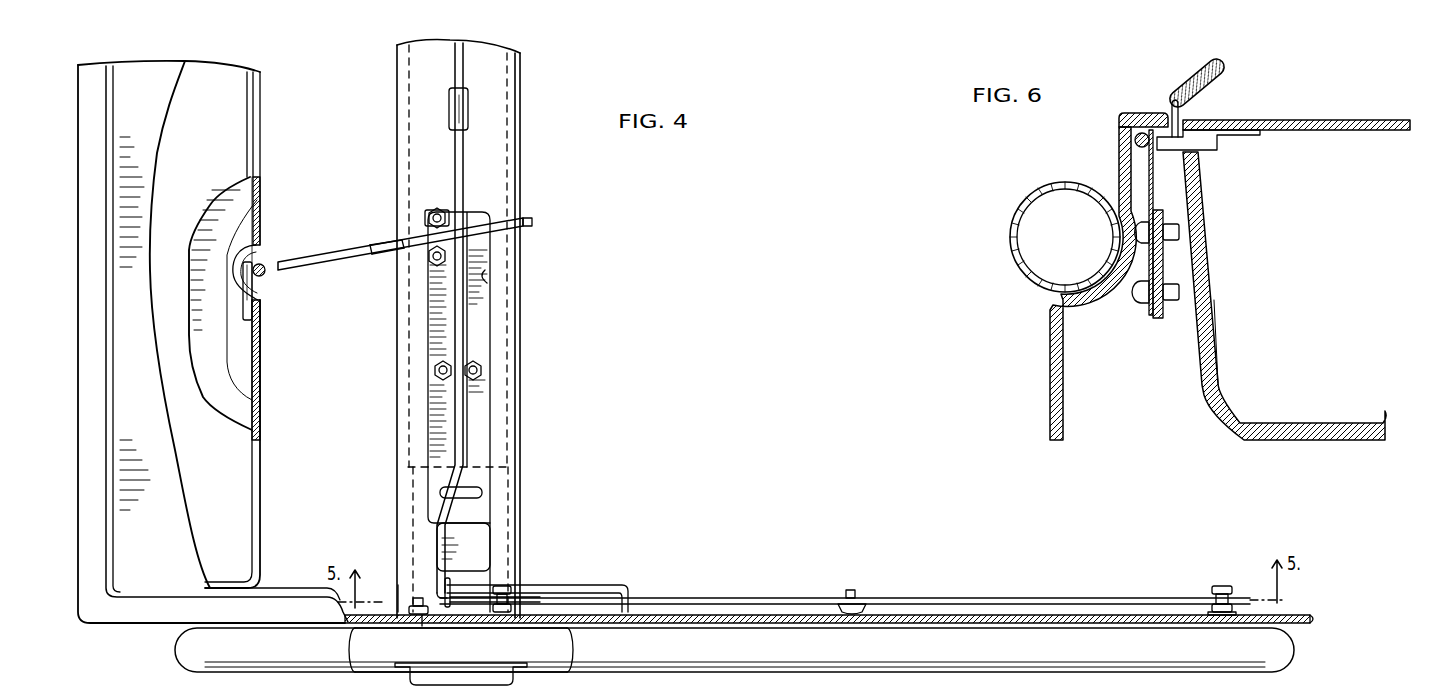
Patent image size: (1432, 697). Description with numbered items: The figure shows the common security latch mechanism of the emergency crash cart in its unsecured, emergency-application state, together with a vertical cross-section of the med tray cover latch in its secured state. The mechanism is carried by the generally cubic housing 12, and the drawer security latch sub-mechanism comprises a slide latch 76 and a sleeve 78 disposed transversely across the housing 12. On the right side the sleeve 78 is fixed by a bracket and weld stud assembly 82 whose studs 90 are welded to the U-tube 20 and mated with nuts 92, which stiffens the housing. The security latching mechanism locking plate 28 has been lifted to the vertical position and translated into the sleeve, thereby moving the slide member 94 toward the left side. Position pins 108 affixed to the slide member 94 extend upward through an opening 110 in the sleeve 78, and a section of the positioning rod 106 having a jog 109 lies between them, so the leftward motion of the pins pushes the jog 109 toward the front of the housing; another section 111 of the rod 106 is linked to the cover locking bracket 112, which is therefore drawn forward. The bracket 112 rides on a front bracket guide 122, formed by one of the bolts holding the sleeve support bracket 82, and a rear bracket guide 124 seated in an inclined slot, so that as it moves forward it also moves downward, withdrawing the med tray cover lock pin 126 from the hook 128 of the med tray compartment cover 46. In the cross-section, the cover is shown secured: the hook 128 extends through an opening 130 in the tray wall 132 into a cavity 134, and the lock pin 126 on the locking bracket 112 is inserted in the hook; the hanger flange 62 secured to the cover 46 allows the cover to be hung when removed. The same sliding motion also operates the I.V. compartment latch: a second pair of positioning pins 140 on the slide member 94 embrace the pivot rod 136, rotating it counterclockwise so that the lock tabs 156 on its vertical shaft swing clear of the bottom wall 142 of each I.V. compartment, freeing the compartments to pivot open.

In FIG. 4, the housing 12 is at (134, 620).
In FIG. 4, the U-tube 20 is at (205, 668).
In FIG. 6, the U-tube 20 is at (1012, 210).
In FIG. 4, the security latching mechanism locking plate 28 is at (503, 683).
In FIG. 6, the med tray compartment cover 46 is at (1322, 120).
In FIG. 6, the hanger flange 62 is at (1222, 64).
In FIG. 4, the slide latch 76 is at (480, 448).
In FIG. 4, the sleeve 78 is at (520, 145).
In FIG. 4, the bracket and weld stud assembly 82 is at (422, 578).
In FIG. 4, the studs 90 is at (412, 600).
In FIG. 4, the nuts 92 is at (414, 615).
In FIG. 4, the slide member 94 is at (480, 310).
In FIG. 4, the positioning rod 106 is at (466, 420).
In FIG. 4, the position pins 108 is at (448, 362).
In FIG. 4, the jog 109 is at (428, 506).
In FIG. 4, the opening 110 is at (487, 283).
In FIG. 4, the section of the rod 111 is at (632, 590).
In FIG. 4, the cover locking bracket 112 is at (720, 592).
In FIG. 6, the cover locking bracket 112 is at (1165, 262).
In FIG. 4, the bracket guide 122 is at (510, 585).
In FIG. 4, the rear bracket guide 124 is at (1225, 585).
In FIG. 6, the med tray cover lock pin 126 is at (1117, 165).
In FIG. 6, the hook 128 is at (1222, 153).
In FIG. 6, the opening 130 is at (1165, 125).
In FIG. 6, the tray wall 132 is at (1200, 225).
In FIG. 6, the cavity 134 is at (1132, 333).
In FIG. 4, the pivot rod 136 is at (346, 268).
In FIG. 4, the second pair of positioning pins 140 is at (428, 218).
In FIG. 4, the bottom wall 142 is at (232, 203).
In FIG. 4, the lock tabs 156 is at (259, 318).